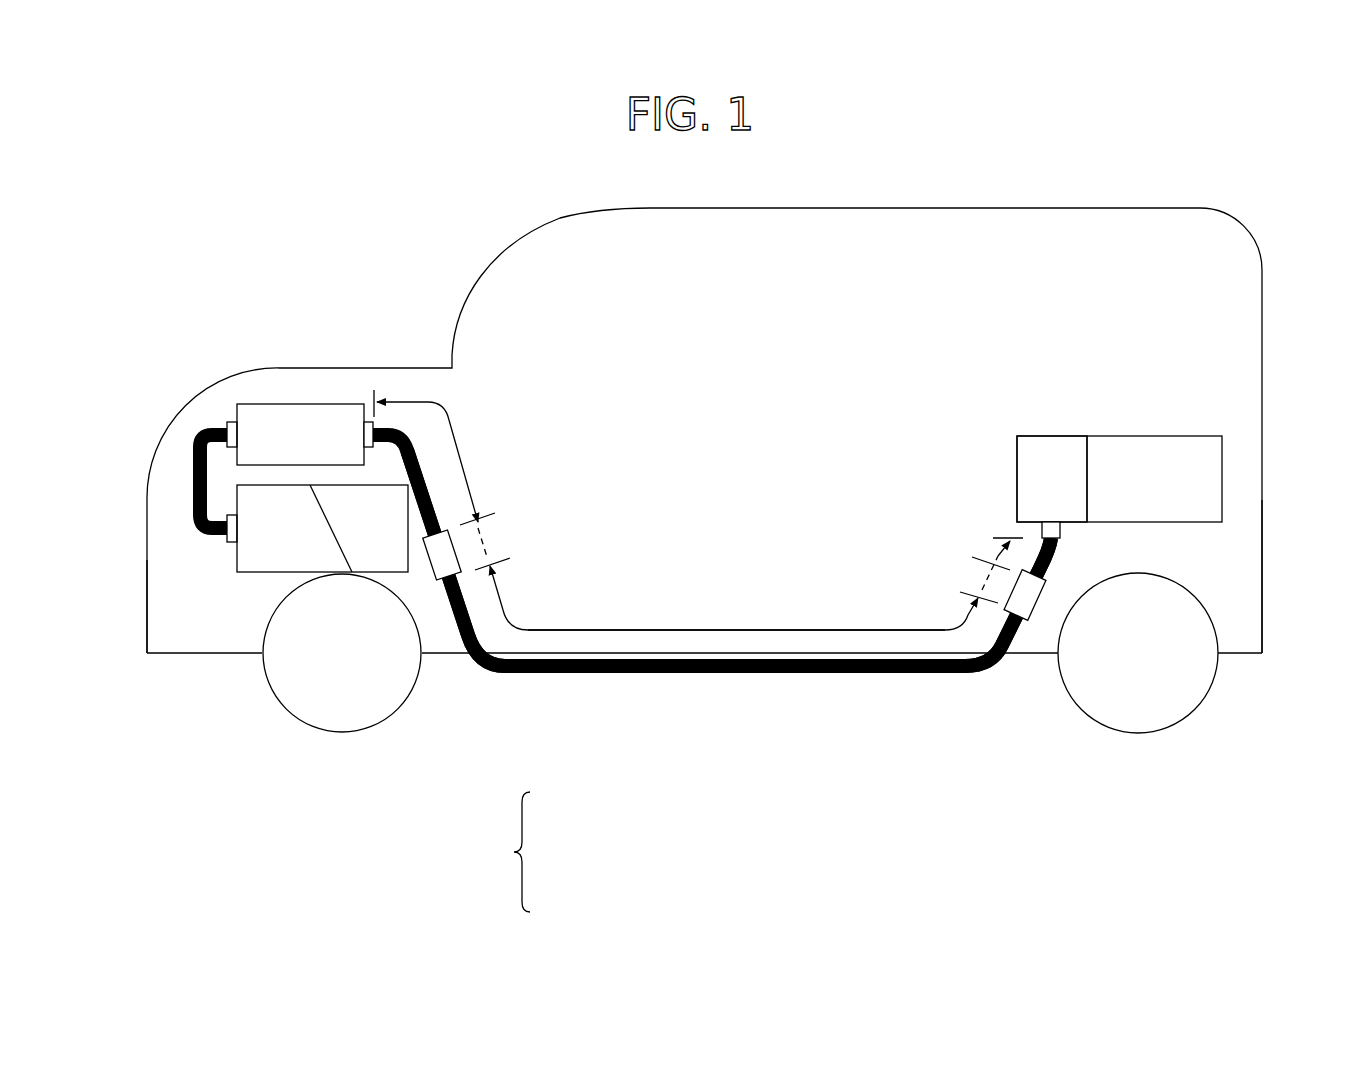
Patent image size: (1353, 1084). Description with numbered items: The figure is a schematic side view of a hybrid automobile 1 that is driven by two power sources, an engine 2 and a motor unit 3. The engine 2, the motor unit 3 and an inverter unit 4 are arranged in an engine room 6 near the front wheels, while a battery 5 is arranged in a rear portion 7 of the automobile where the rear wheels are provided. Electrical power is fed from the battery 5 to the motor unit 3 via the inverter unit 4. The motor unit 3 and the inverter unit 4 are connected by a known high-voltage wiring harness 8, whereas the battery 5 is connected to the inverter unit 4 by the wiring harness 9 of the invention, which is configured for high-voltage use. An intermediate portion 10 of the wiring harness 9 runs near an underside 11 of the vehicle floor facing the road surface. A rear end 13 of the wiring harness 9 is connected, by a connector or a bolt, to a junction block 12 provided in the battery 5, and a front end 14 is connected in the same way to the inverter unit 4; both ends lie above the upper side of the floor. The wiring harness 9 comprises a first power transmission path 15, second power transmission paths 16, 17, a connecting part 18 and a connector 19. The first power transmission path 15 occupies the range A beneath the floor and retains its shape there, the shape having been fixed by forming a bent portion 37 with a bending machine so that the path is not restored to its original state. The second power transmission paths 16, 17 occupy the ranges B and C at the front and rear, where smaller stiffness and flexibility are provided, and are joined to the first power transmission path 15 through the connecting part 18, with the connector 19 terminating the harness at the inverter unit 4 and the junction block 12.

The hybrid automobile 1 is at (387, 231).
The engine 2 is at (367, 558).
The motor unit 3 is at (263, 557).
The inverter unit 4 is at (283, 427).
The battery 5 is at (1175, 436).
The engine room 6 is at (165, 612).
The rear portion 7 is at (1240, 570).
The high-voltage wiring harness 8 is at (200, 477).
The wiring harness 9 is at (527, 854).
The intermediate portion 10 is at (775, 675).
The underside 11 is at (837, 657).
The junction block 12 is at (1057, 436).
The rear end 13 is at (1060, 555).
The front end 14 is at (398, 430).
The first power transmission path 15 is at (660, 677).
The second power transmission path 16 is at (428, 472).
The second power transmission path 17 is at (1061, 561).
The connecting part 18 is at (430, 573).
The connector 19 is at (370, 430).
The bent portion 37 is at (477, 672).
The range A is at (742, 630).
The range B is at (470, 490).
The range C is at (1003, 548).